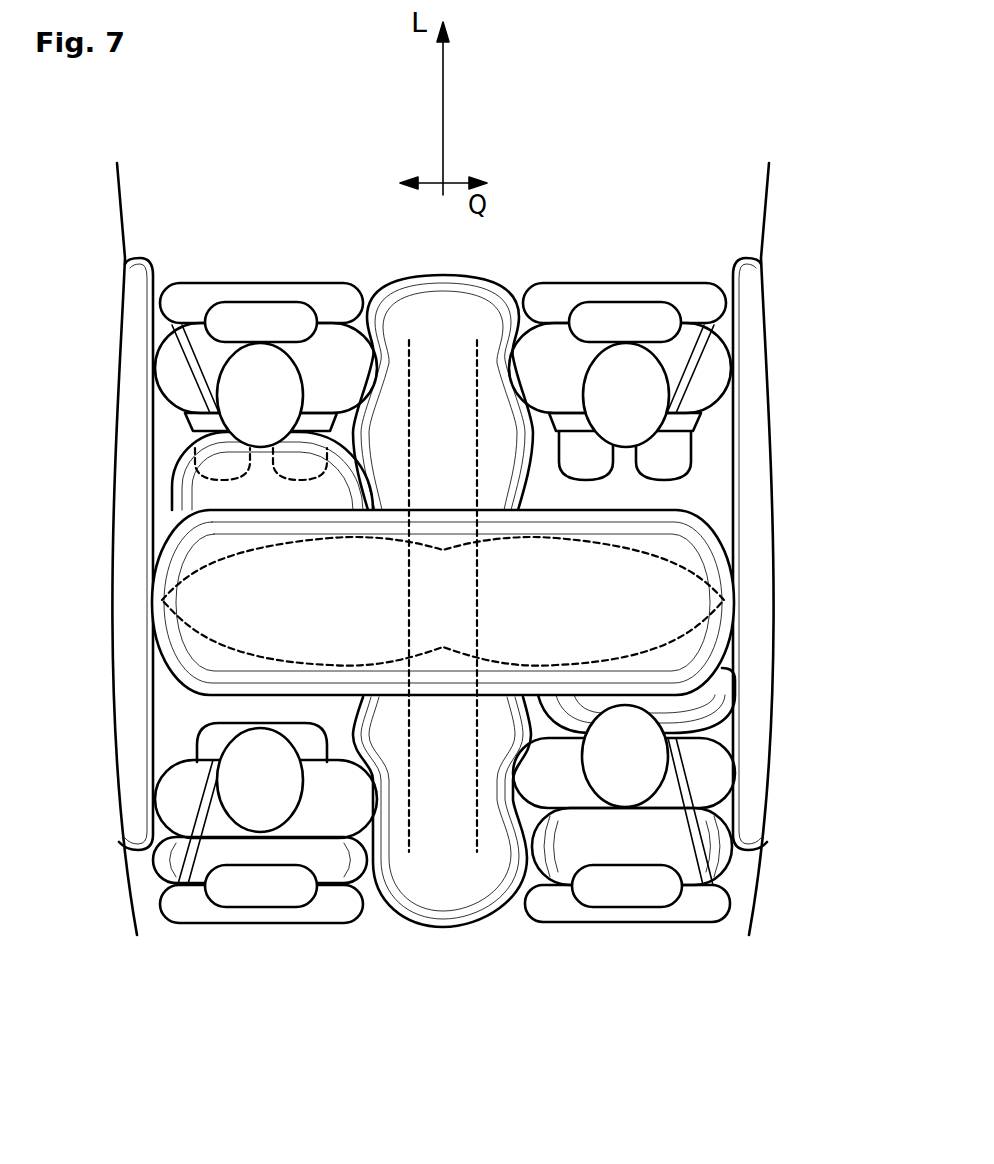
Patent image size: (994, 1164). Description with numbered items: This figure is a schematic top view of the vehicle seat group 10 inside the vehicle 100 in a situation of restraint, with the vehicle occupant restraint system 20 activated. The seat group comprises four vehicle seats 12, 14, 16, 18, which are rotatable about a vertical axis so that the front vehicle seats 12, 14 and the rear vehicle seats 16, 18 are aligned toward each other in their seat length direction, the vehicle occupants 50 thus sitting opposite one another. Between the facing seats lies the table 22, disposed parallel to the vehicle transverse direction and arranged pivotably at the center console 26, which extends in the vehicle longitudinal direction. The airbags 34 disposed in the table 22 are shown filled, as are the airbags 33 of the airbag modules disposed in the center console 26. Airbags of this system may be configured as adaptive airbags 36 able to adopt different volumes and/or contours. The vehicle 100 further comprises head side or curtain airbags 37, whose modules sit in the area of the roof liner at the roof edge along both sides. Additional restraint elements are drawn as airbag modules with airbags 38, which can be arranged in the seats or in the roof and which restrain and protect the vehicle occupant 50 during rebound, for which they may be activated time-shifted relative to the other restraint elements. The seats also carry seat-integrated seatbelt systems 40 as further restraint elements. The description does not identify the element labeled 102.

The vehicle seat group 10 is at (704, 109).
The vehicle occupant restraint system 20 is at (660, 152).
The vehicle 100 is at (786, 276).
The vehicle floor 102 is at (690, 490).
The vehicle seat 12 is at (690, 297).
The vehicle seat 14 is at (180, 297).
The vehicle seat 16 is at (693, 903).
The vehicle seat 18 is at (180, 903).
The table 22 is at (705, 574).
The center console 26 is at (408, 347).
The airbag 33 is at (462, 357).
The airbag 34 is at (705, 645).
The adaptive airbag 36 is at (167, 485).
The curtain airbag 37 is at (747, 368).
The airbag 38 is at (273, 848).
The seat-integrated seatbelt system 40 is at (190, 350).
The vehicle occupant 50 is at (333, 347).